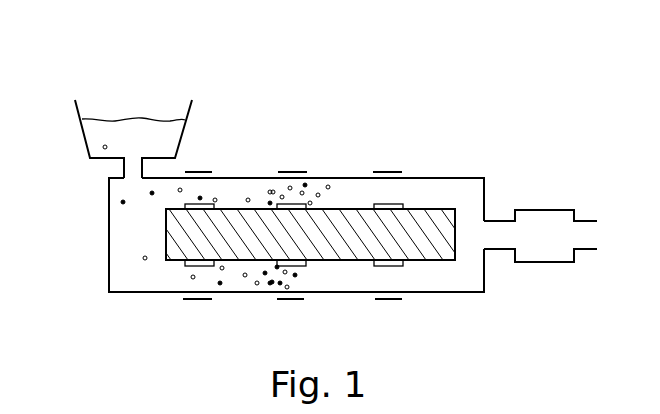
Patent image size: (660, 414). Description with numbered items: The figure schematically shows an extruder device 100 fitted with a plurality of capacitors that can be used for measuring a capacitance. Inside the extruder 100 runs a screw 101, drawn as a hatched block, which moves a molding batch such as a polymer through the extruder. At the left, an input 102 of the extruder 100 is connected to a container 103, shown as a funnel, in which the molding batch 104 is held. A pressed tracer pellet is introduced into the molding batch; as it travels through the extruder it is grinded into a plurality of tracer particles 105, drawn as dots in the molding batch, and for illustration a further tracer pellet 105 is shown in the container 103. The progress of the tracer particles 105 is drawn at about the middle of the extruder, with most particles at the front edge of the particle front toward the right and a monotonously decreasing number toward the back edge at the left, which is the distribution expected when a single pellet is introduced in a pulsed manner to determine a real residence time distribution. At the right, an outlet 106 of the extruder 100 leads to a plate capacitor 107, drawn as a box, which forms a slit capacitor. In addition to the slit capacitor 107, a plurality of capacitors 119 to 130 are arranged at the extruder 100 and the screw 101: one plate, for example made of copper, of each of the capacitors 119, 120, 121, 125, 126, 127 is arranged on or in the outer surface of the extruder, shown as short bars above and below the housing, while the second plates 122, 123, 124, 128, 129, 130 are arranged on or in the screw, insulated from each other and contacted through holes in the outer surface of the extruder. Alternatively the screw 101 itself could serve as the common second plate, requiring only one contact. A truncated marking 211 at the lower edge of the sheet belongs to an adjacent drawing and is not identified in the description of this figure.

The extruder device 100 is at (514, 94).
The screw 101 is at (433, 209).
The input 102 is at (112, 171).
The container 103 is at (188, 119).
The molding batch 104 is at (140, 117).
The tracer particles 105 is at (103, 147).
The outlet 106 is at (500, 220).
The plate capacitor 107 is at (548, 210).
The capacitor 119 is at (392, 172).
The capacitor 120 is at (298, 172).
The capacitor 121 is at (200, 172).
The second plate 122 is at (388, 206).
The second plate 123 is at (293, 206).
The second plate 124 is at (185, 206).
The capacitor 125 is at (383, 300).
The capacitor 126 is at (292, 300).
The capacitor 127 is at (197, 300).
The second plate 128 is at (388, 262).
The second plate 129 is at (297, 262).
The second plate 130 is at (185, 262).
The reference numeral (adjacent figure) 211 is at (400, 411).